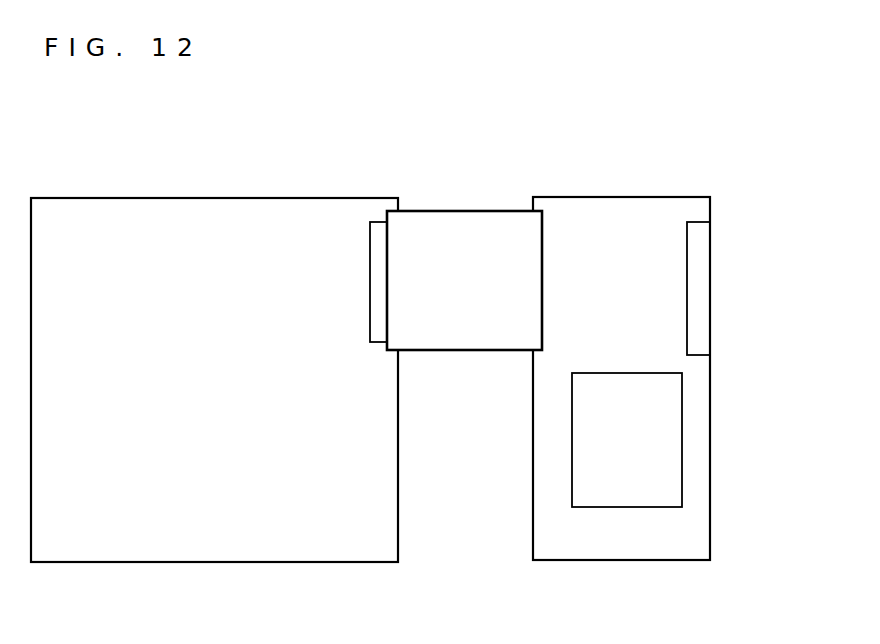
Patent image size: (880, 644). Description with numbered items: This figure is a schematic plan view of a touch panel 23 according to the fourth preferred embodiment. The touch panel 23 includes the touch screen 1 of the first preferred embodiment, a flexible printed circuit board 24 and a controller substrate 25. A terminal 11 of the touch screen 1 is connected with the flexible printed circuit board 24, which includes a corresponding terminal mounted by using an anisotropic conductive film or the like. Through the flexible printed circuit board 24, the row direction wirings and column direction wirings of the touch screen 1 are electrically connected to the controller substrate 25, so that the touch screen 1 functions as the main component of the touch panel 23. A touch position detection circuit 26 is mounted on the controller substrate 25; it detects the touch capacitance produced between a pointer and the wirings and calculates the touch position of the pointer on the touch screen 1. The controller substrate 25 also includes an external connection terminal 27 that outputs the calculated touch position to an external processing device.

The touch screen 1 is at (213, 562).
The terminal 11 is at (376, 221).
The touch panel 23 is at (287, 113).
The flexible printed circuit board 24 is at (466, 350).
The controller substrate 25 is at (618, 197).
The touch position detection circuit 26 is at (629, 507).
The external connection terminal 27 is at (700, 355).